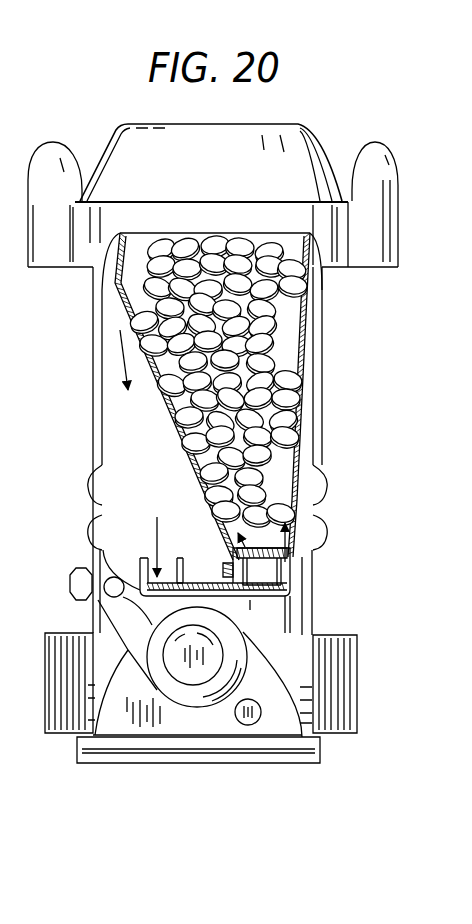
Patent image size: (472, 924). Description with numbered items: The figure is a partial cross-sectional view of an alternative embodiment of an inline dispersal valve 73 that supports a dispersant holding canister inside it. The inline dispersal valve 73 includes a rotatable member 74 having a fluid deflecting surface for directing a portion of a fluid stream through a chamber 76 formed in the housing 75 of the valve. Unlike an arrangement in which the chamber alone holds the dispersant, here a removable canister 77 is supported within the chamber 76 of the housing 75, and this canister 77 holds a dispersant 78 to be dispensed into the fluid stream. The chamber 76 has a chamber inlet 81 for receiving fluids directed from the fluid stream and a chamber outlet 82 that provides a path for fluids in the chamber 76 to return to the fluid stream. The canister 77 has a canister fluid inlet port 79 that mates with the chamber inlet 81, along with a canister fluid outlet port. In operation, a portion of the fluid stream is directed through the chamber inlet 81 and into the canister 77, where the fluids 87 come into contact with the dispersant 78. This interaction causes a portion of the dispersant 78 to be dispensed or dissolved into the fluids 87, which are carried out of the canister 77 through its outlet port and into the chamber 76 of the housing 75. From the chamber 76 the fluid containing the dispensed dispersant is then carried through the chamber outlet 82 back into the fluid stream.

The inline dispersal valve 73 is at (323, 115).
The rotatable member 74 is at (193, 670).
The housing 75 is at (93, 400).
The chamber 76 is at (158, 485).
The removable canister 77 is at (310, 358).
The dispersant 78 is at (251, 397).
The canister fluid inlet port 79 is at (302, 555).
The chamber inlet 81 is at (292, 578).
The chamber outlet 82 is at (140, 583).
The fluids 87 is at (157, 517).